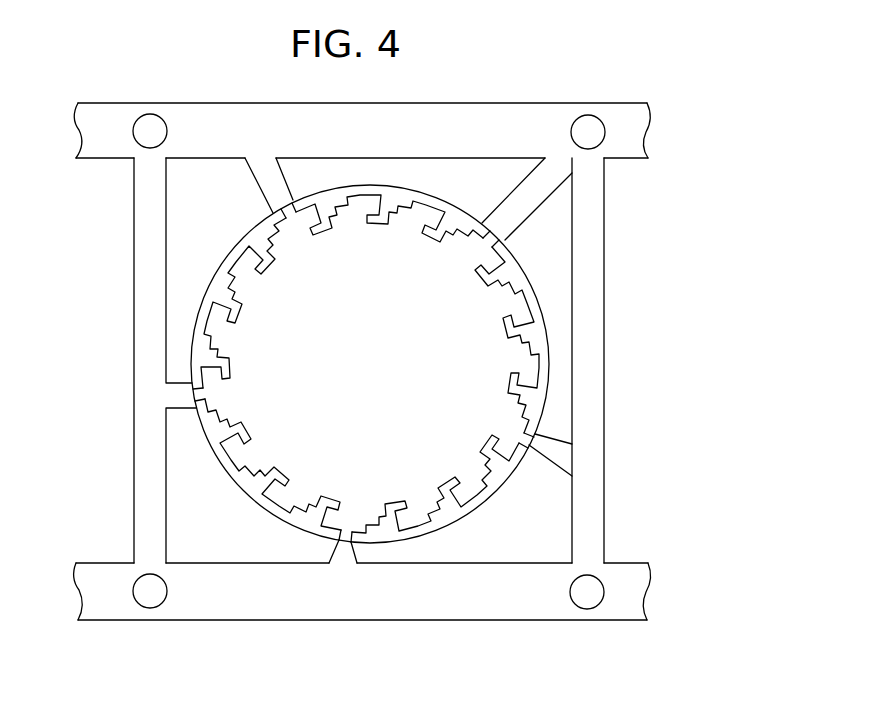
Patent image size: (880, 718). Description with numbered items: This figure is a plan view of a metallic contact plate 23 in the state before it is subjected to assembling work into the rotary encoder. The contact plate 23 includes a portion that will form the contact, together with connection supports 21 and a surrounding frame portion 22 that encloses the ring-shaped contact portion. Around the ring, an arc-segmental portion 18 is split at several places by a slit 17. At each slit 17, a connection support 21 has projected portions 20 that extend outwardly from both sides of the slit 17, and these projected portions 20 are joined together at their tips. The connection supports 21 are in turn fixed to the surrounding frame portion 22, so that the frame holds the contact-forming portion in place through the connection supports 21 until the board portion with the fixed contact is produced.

The slit 17 is at (502, 236).
The arc-segmental portion 18 is at (531, 307).
The projected portions 20 is at (537, 434).
The connection supports 21 is at (530, 448).
The surrounding frame portion 22 is at (585, 518).
The metallic contact plate 23 is at (392, 377).